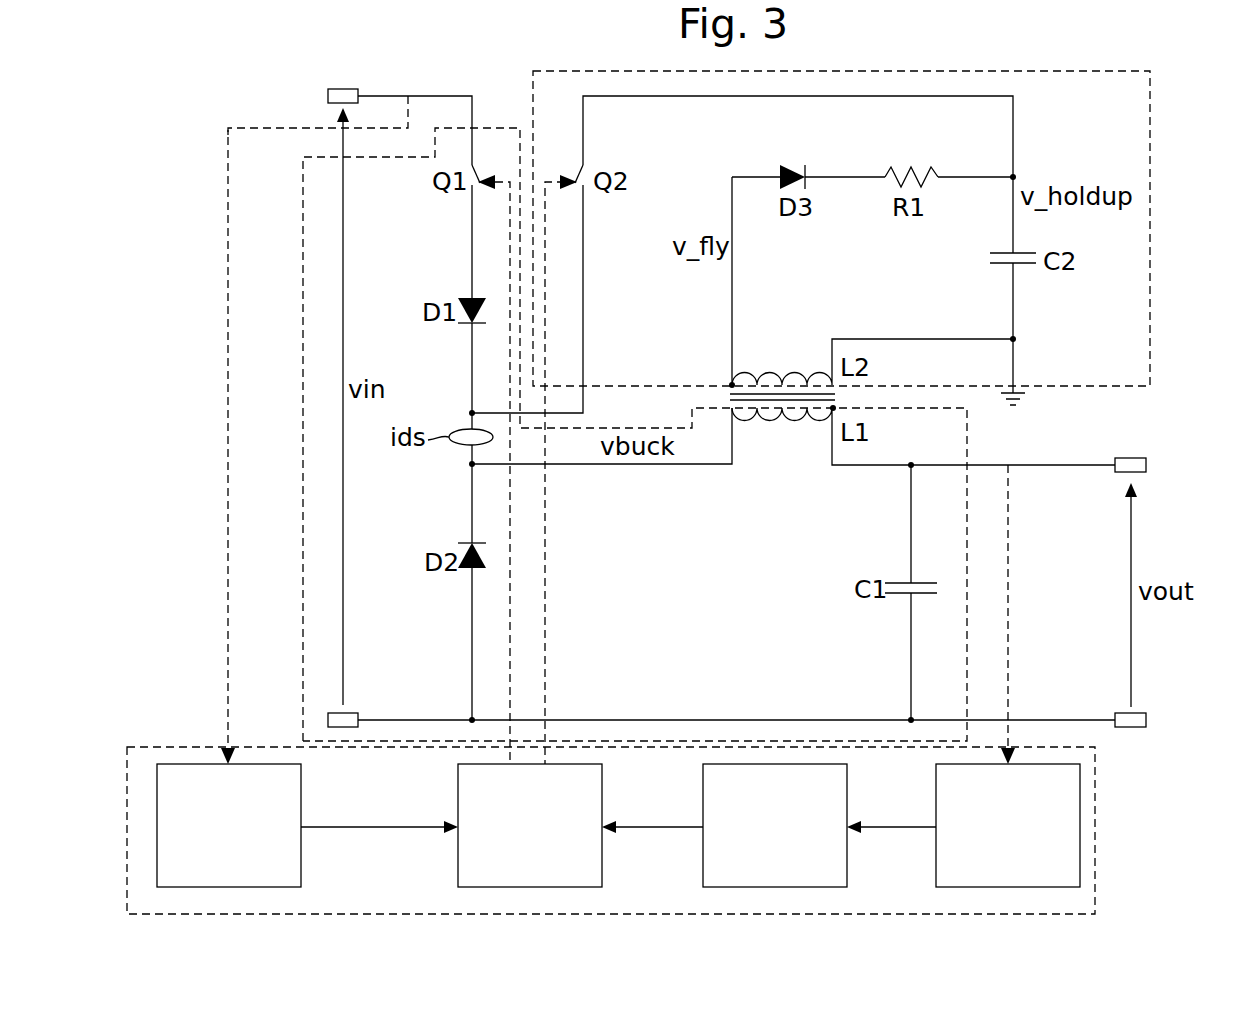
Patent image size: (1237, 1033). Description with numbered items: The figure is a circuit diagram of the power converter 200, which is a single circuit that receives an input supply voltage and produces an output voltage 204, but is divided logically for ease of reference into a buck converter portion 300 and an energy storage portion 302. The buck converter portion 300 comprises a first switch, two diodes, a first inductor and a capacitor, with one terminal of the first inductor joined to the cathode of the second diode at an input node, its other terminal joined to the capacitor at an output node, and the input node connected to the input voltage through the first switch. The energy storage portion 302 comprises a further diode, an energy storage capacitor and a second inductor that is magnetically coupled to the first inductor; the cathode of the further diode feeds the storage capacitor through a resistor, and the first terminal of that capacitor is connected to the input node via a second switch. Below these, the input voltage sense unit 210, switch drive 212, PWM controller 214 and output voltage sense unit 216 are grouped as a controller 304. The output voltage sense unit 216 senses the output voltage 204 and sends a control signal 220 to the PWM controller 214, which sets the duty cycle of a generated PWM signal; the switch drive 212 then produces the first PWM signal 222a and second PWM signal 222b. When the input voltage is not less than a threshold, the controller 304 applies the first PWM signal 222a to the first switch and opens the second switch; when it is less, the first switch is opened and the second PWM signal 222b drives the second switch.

The power converter 200 is at (327, 95).
The output voltage 204 is at (1133, 458).
The input voltage sense unit 210 is at (229, 825).
The switch drive 212 is at (530, 825).
The PWM controller 214 is at (775, 825).
The output voltage sense unit 216 is at (1008, 825).
The control signal 220 is at (655, 830).
The first PWM signal 222a is at (498, 633).
The second PWM signal 222b is at (560, 633).
The buck converter portion 300 is at (303, 303).
The energy storage portion 302 is at (1150, 253).
The controller 304 is at (183, 746).